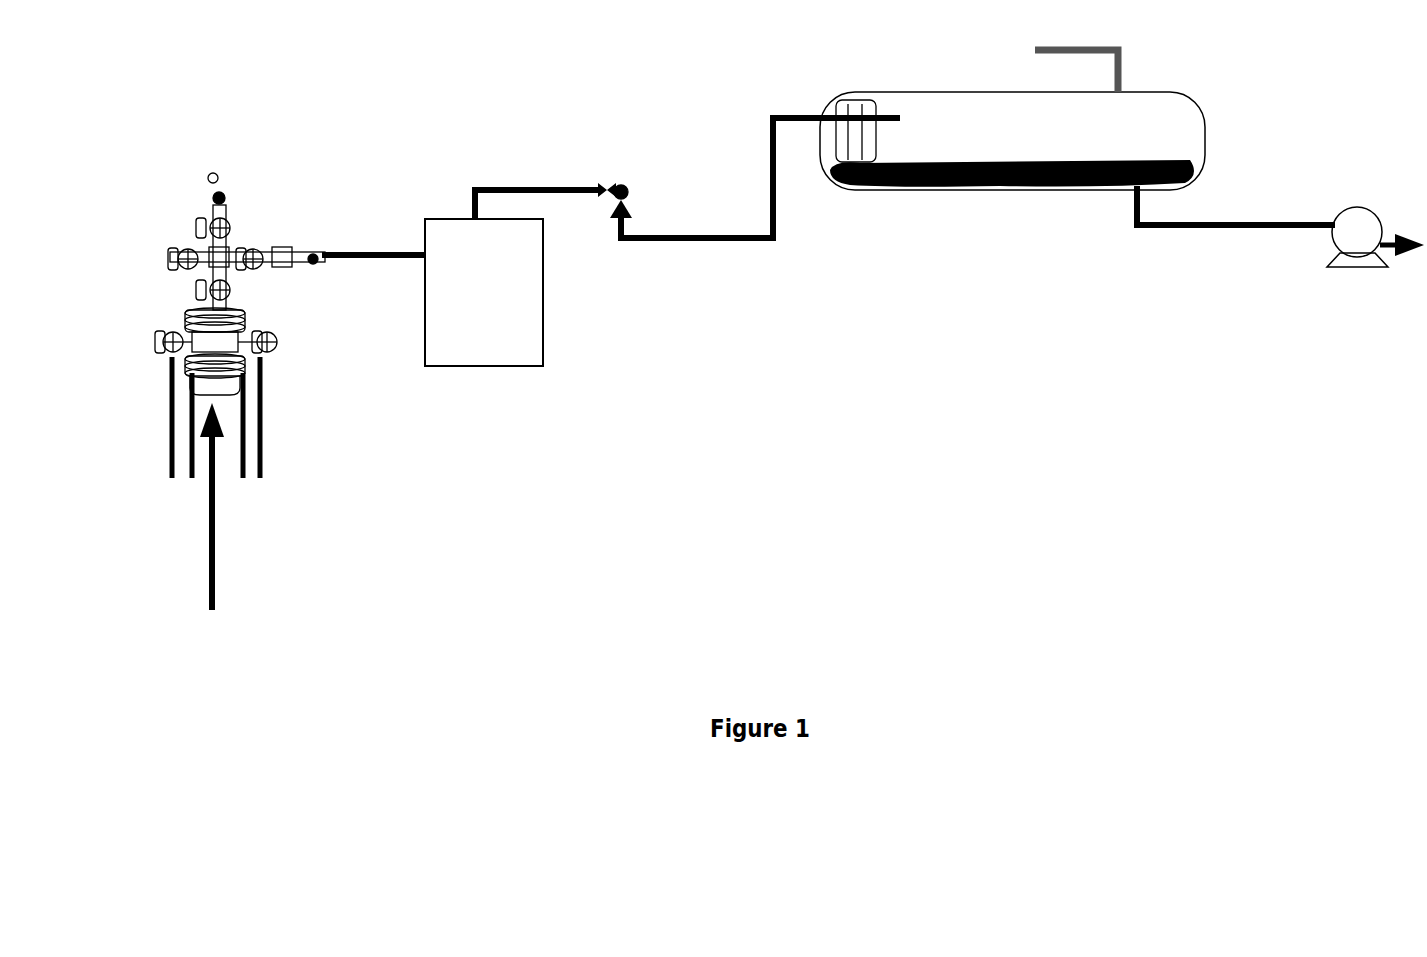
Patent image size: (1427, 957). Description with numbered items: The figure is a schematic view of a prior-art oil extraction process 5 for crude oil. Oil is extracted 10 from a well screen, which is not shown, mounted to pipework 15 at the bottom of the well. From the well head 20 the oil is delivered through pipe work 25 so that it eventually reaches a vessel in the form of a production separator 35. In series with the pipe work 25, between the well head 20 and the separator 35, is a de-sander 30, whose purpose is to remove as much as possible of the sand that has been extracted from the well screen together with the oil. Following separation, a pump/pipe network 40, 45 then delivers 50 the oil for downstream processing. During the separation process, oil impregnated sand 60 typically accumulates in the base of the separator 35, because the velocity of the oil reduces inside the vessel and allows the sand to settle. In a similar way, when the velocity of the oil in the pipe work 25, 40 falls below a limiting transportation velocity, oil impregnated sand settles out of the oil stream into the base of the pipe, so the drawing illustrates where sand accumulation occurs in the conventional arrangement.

The oil extraction process 5 is at (450, 635).
The oil extraction 10 is at (210, 530).
The pipework 15 is at (170, 408).
The well head 20 is at (235, 228).
The pipe work 25 is at (360, 258).
The de-sander 30 is at (546, 345).
The production separator 35 is at (932, 193).
The pipe network 40 is at (1190, 237).
The pump 45 is at (1320, 272).
The oil delivery 50 is at (1402, 258).
The oil impregnated sand 60 is at (1013, 183).